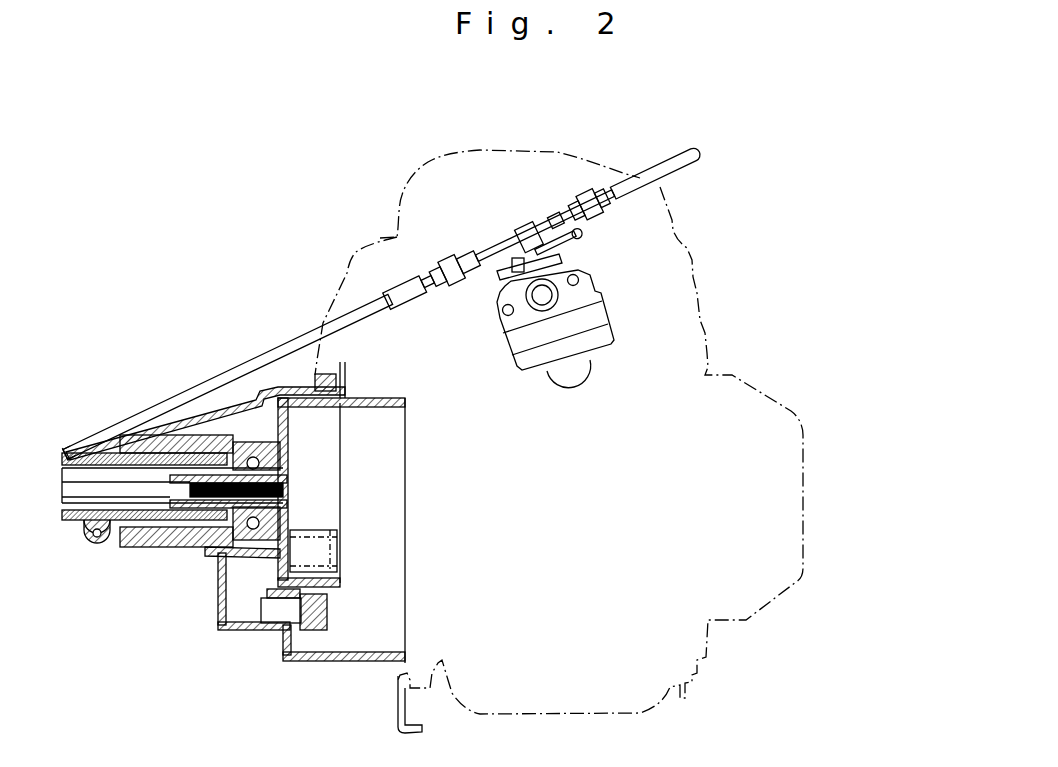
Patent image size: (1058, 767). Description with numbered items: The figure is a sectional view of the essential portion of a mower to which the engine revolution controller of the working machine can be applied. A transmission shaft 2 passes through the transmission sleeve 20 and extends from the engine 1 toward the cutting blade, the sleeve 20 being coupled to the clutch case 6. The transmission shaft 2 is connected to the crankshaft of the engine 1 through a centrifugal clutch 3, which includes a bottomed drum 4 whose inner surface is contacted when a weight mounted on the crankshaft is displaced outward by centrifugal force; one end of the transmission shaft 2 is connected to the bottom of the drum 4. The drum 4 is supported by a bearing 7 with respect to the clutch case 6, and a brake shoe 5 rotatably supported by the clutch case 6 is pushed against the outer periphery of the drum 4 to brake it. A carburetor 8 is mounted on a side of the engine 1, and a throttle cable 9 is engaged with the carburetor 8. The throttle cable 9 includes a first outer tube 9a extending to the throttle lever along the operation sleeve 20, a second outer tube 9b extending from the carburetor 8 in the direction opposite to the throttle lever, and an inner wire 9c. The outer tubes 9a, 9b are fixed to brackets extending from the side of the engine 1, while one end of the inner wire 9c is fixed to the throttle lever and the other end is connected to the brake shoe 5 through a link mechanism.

The engine 1 is at (696, 268).
The transmission shaft 2 is at (67, 508).
The centrifugal clutch 3 is at (345, 478).
The drum 4 is at (337, 380).
The brake shoe 5 is at (330, 528).
The clutch case 6 is at (282, 392).
The bearing 7 is at (228, 563).
The carburetor 8 is at (588, 398).
The throttle cable 9 is at (358, 302).
The first outer tube 9a is at (147, 410).
The second outer tube 9b is at (677, 163).
The inner wire 9c is at (490, 247).
The transmission sleeve 20 is at (77, 527).